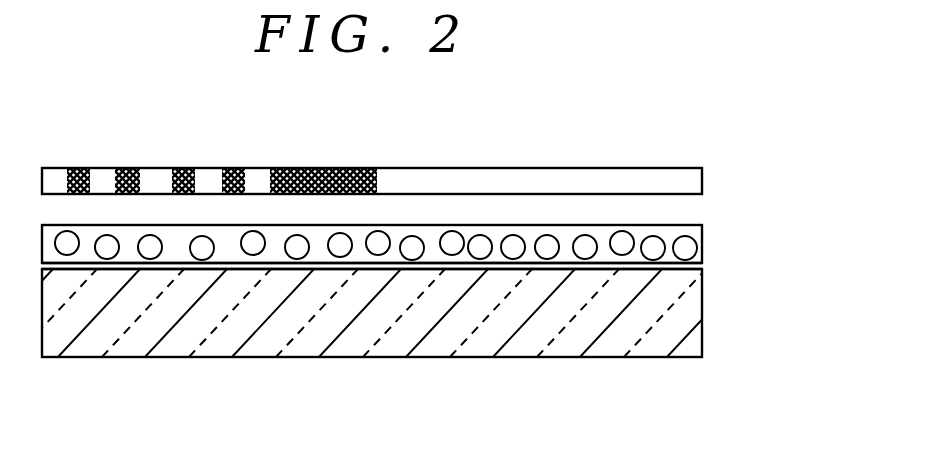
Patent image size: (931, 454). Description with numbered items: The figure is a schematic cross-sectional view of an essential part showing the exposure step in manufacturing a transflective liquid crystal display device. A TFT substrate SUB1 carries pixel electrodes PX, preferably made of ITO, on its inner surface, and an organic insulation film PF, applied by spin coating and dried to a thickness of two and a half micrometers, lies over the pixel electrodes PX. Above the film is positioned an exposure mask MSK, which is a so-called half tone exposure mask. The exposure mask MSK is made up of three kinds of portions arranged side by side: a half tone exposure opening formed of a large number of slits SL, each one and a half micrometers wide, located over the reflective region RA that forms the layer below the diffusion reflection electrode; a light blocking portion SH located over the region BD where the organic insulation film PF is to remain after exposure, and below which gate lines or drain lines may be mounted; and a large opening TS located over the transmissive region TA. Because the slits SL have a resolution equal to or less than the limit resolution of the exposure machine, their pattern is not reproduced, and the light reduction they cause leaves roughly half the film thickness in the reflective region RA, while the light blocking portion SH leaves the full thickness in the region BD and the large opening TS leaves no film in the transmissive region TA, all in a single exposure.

The exposure mask MSK is at (422, 140).
The slits SL is at (260, 147).
The light blocking portion SH is at (318, 168).
The transmissive region of mask TS is at (540, 140).
The organic insulation film PF is at (703, 243).
The pixel electrodes PX is at (703, 267).
The TFT substrate SUB1 is at (697, 338).
The reflective region RA is at (257, 406).
The region corresponding to the non-exposed portion BD is at (272, 400).
The transmissive region TA is at (376, 400).